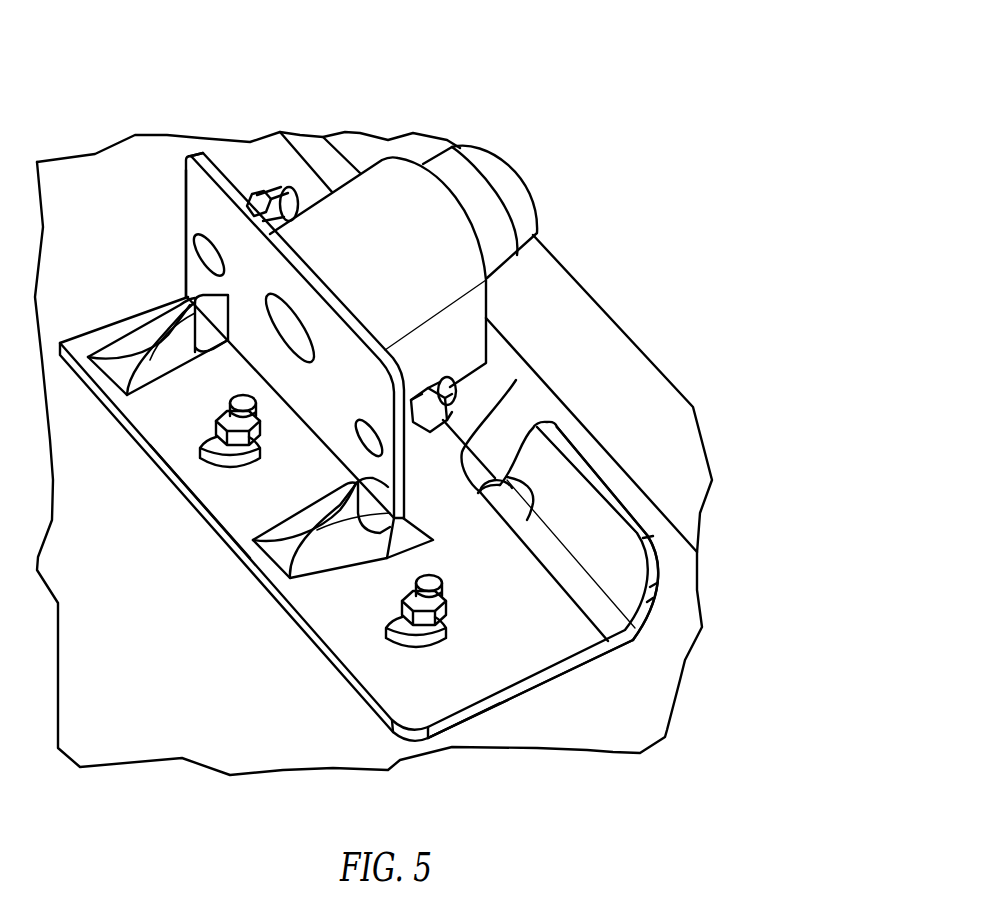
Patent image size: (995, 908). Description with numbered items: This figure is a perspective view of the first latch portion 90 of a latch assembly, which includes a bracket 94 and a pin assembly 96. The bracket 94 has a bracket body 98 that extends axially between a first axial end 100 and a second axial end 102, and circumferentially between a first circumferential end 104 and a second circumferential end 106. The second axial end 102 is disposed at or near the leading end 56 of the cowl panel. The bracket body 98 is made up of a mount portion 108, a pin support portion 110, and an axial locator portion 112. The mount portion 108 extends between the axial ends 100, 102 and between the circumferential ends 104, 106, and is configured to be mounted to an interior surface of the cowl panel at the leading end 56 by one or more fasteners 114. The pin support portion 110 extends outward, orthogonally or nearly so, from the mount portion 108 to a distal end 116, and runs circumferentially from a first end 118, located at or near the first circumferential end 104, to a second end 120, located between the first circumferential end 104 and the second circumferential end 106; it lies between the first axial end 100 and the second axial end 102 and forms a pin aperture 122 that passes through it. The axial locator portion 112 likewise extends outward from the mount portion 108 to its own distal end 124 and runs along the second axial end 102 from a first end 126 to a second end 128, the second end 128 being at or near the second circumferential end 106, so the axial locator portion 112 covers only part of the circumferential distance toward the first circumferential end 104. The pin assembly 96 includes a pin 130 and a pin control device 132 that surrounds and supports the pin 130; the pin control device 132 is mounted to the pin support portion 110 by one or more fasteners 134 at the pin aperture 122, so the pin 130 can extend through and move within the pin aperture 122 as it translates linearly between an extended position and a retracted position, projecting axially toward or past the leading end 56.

The leading end 56 is at (588, 293).
The first latch portion 90 is at (630, 105).
The bracket 94 is at (558, 706).
The pin assembly 96 is at (363, 142).
The bracket body 98 is at (355, 603).
The first axial end 100 is at (203, 506).
The second axial end 102 is at (503, 388).
The first circumferential end 104 is at (137, 322).
The second circumferential end 106 is at (480, 712).
The mount portion 108 is at (197, 397).
The pin support portion 110 is at (197, 187).
The axial locator portion 112 is at (593, 528).
The fasteners 114 is at (212, 428).
The distal end of pin support portion 116 is at (213, 172).
The first end of pin support portion 118 is at (183, 221).
The second end of pin support portion 120 is at (400, 467).
The pin aperture 122 is at (257, 328).
The distal end of axial locator portion 124 is at (593, 478).
The first end of axial locator portion 126 is at (527, 520).
The second end of axial locator portion 128 is at (650, 602).
The pin 130 is at (483, 163).
The pin control device 132 is at (405, 170).
The fasteners 134 is at (263, 195).